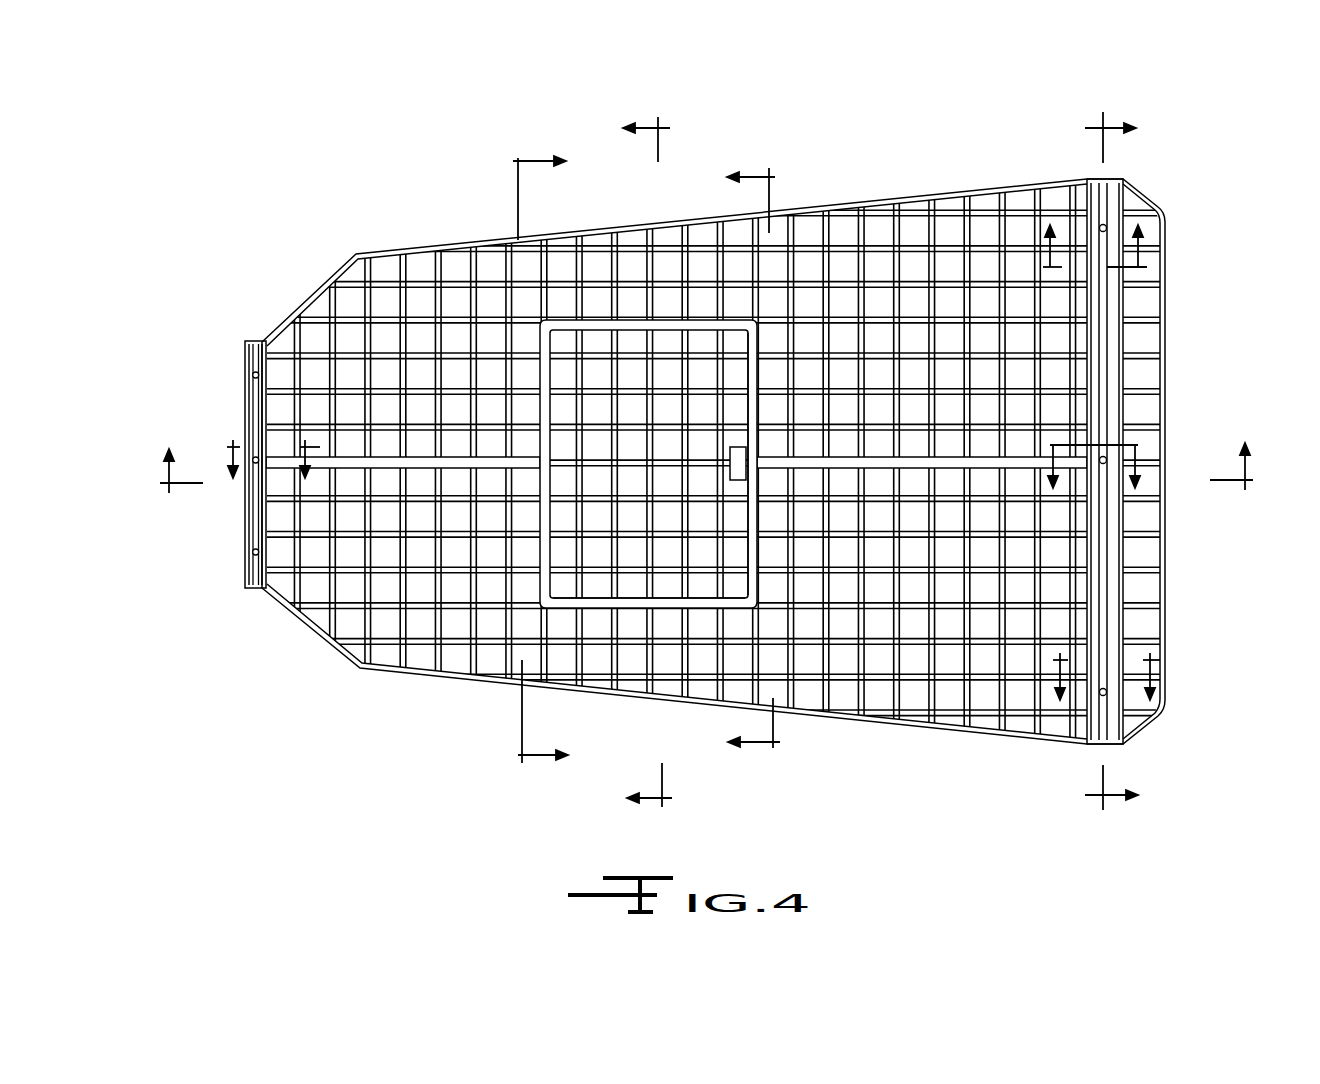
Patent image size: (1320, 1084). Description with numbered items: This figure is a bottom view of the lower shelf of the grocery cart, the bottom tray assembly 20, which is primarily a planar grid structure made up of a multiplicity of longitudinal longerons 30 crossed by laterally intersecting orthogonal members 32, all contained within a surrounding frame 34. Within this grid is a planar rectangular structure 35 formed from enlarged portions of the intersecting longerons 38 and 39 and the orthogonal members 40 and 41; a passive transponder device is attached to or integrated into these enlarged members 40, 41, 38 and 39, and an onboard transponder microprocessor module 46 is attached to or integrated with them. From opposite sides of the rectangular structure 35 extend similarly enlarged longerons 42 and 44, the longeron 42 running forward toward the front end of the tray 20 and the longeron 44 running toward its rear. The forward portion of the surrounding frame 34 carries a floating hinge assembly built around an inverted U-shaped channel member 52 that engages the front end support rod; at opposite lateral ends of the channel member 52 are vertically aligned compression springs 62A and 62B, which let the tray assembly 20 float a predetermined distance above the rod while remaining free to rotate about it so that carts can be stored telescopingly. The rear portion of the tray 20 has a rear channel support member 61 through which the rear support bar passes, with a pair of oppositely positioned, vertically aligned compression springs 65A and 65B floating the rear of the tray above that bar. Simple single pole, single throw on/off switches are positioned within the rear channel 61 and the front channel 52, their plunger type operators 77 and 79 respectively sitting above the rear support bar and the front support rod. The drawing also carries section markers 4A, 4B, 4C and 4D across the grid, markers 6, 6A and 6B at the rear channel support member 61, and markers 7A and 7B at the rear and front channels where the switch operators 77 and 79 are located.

The bottom tray assembly 20 is at (1043, 165).
The longitudinal longerons 30 is at (998, 240).
The orthogonal members 32 is at (957, 220).
The surrounding frame 34 is at (1007, 181).
The planar rectangular structure 35 is at (669, 305).
The longeron 38 is at (645, 320).
The longeron 39 is at (633, 608).
The orthogonal member 40 is at (758, 378).
The orthogonal member 41 is at (535, 380).
The longeron 42 is at (372, 445).
The longeron 44 is at (876, 468).
The onboard transponder microprocessor module 46 is at (731, 458).
The channel member 52 is at (245, 410).
The rear channel support member 61 is at (1107, 612).
The compression spring 62A is at (250, 590).
The compression spring 62B is at (249, 345).
The compression spring 65A is at (1107, 697).
The compression spring 65B is at (1104, 225).
The plunger type operator 77 is at (1103, 468).
The plunger type operator 79 is at (253, 508).
The section line 4A is at (753, 460).
The section line 4B is at (650, 461).
The section line 4C is at (540, 460).
The section line 4D is at (706, 470).
The section line 6 is at (1111, 461).
The section line 6A is at (1107, 676).
The section line 6B is at (1101, 245).
The section line 7A is at (1096, 478).
The section line 7B is at (269, 450).